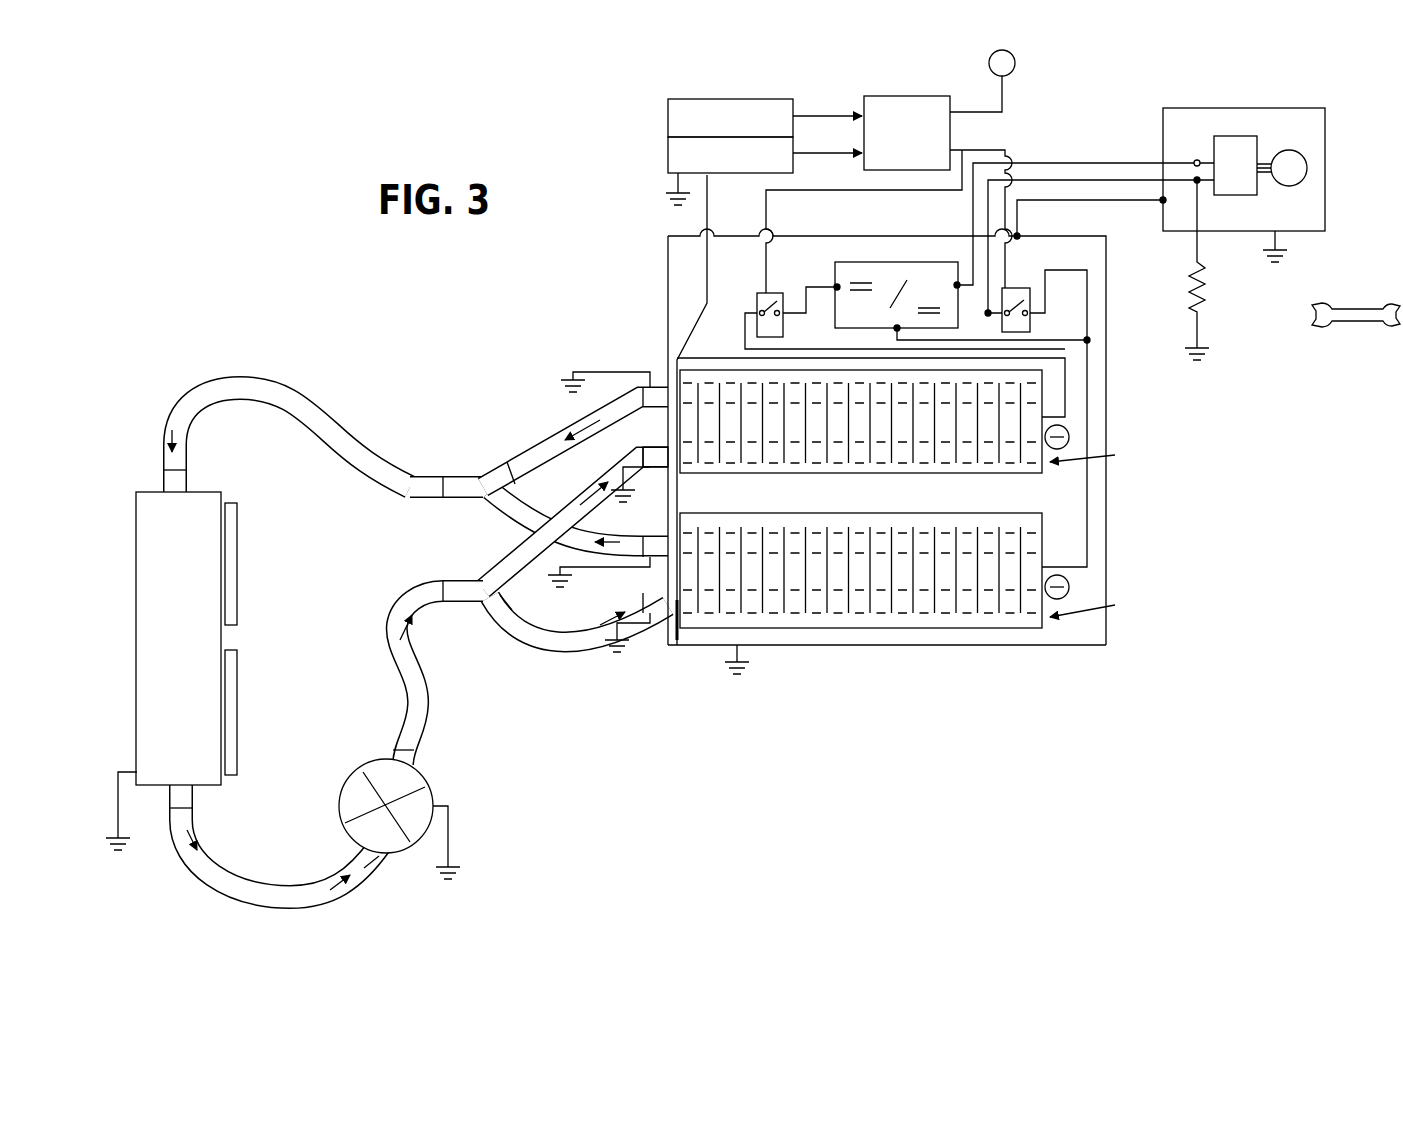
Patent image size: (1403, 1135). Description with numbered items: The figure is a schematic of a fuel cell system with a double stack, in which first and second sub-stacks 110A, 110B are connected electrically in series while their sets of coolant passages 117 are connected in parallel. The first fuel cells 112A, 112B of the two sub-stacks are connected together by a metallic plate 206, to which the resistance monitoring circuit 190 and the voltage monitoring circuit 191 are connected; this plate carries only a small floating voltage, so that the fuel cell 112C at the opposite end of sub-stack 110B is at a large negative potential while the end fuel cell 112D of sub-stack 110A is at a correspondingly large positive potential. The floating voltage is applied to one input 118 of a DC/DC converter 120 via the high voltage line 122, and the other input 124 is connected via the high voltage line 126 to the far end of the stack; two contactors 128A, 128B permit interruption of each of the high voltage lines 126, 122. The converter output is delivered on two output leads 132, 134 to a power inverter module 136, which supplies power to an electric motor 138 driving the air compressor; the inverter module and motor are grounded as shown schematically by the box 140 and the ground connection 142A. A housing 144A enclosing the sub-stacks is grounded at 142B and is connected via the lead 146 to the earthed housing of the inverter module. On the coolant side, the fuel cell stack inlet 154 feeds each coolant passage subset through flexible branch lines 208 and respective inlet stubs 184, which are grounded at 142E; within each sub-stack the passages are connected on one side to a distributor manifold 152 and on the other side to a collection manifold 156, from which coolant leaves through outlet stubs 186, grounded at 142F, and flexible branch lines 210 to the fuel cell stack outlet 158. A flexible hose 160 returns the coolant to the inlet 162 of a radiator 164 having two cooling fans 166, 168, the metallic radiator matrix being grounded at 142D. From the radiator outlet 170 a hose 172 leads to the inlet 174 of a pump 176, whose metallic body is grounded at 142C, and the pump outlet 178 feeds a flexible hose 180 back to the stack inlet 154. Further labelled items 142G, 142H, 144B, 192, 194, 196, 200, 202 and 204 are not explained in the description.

The first sub-stack 110A is at (1112, 448).
The second sub-stack 110B is at (1112, 596).
The first fuel cell 112A is at (688, 572).
The first fuel cell 112B is at (670, 436).
The fuel cell 112C is at (1040, 542).
The end fuel cell 112D is at (1032, 407).
The coolant passages 117 is at (768, 432).
The input of DC/DC converter 118 is at (836, 286).
The DC/DC converter 120 is at (890, 276).
The high voltage line 122 is at (840, 350).
The other input of DC/DC converter 124 is at (896, 327).
The high voltage line 126 is at (1036, 348).
The contactor 128A is at (1021, 298).
The contactor 128B is at (760, 304).
The output lead 132 is at (1038, 170).
The output lead 134 is at (1096, 178).
The power inverter module 136 is at (1224, 135).
The electric motor 138 is at (1306, 164).
The earthed housing 140 is at (1272, 120).
The ground connection 142A is at (1284, 254).
The ground connection 142B is at (746, 668).
The ground connection 142C is at (455, 840).
The ground connection 142D is at (122, 852).
The ground connection 142E is at (620, 490).
The ground connection 142F is at (564, 372).
The ground 142G is at (670, 190).
The ground 142H is at (1216, 352).
The housing 144A is at (942, 647).
The housing 144B is at (666, 258).
The lead 146 is at (1117, 205).
The distributor manifold 152 is at (963, 455).
The fuel cell stack inlet 154 is at (470, 616).
The collection manifold 156 is at (727, 392).
The fuel cell stack outlet 158 is at (480, 474).
The flexible hose 160 is at (302, 395).
The radiator inlet 162 is at (186, 476).
The radiator 164 is at (152, 504).
The cooling fan 166 is at (236, 542).
The cooling fan 168 is at (236, 712).
The radiator outlet 170 is at (192, 808).
The hose 172 is at (270, 895).
The pump inlet 174 is at (370, 864).
The pump 176 is at (356, 788).
The pump outlet 178 is at (415, 760).
The flexible hose 180 is at (402, 680).
The inlet stub 184 is at (660, 468).
The outlet stub 186 is at (662, 392).
The resistance monitoring circuit 190 is at (668, 152).
The voltage monitoring circuit 191 is at (668, 110).
The signal line 192 is at (805, 154).
The controller 194 is at (904, 110).
The resistor 196 is at (1312, 316).
The indicator 200 is at (1015, 64).
The signal line 202 is at (1003, 100).
The signal line 204 is at (822, 112).
The metallic plate 206 is at (674, 640).
The flexible branch lines 208 is at (500, 560).
The flexible branch lines 210 is at (546, 432).